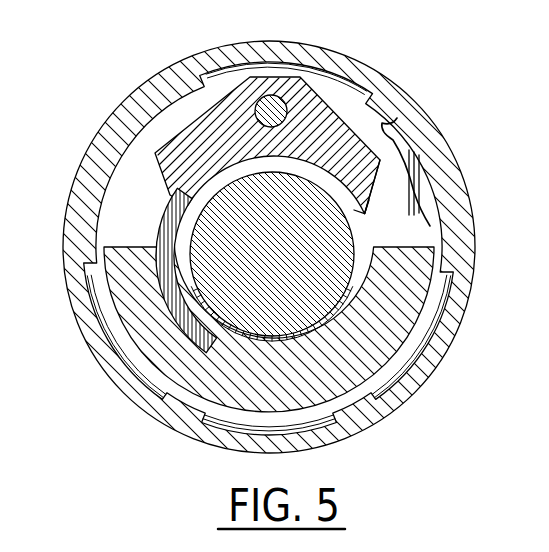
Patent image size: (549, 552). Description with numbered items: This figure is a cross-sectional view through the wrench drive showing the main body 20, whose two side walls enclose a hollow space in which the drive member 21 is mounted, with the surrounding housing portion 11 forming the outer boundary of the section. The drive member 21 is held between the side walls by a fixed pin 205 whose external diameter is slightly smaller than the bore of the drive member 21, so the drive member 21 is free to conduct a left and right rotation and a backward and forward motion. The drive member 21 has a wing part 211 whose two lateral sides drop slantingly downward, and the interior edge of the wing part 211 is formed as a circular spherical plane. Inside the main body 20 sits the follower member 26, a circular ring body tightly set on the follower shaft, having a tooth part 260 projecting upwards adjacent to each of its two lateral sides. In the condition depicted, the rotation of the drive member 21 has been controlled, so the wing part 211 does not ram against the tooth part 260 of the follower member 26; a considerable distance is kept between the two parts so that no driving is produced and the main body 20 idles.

The housing 11 is at (400, 118).
The main body 20 is at (157, 353).
The drive member 21 is at (233, 100).
The follower member 26 is at (183, 204).
The fixed pin 205 is at (277, 96).
The wing part 211 is at (380, 172).
The tooth part 260 is at (360, 214).